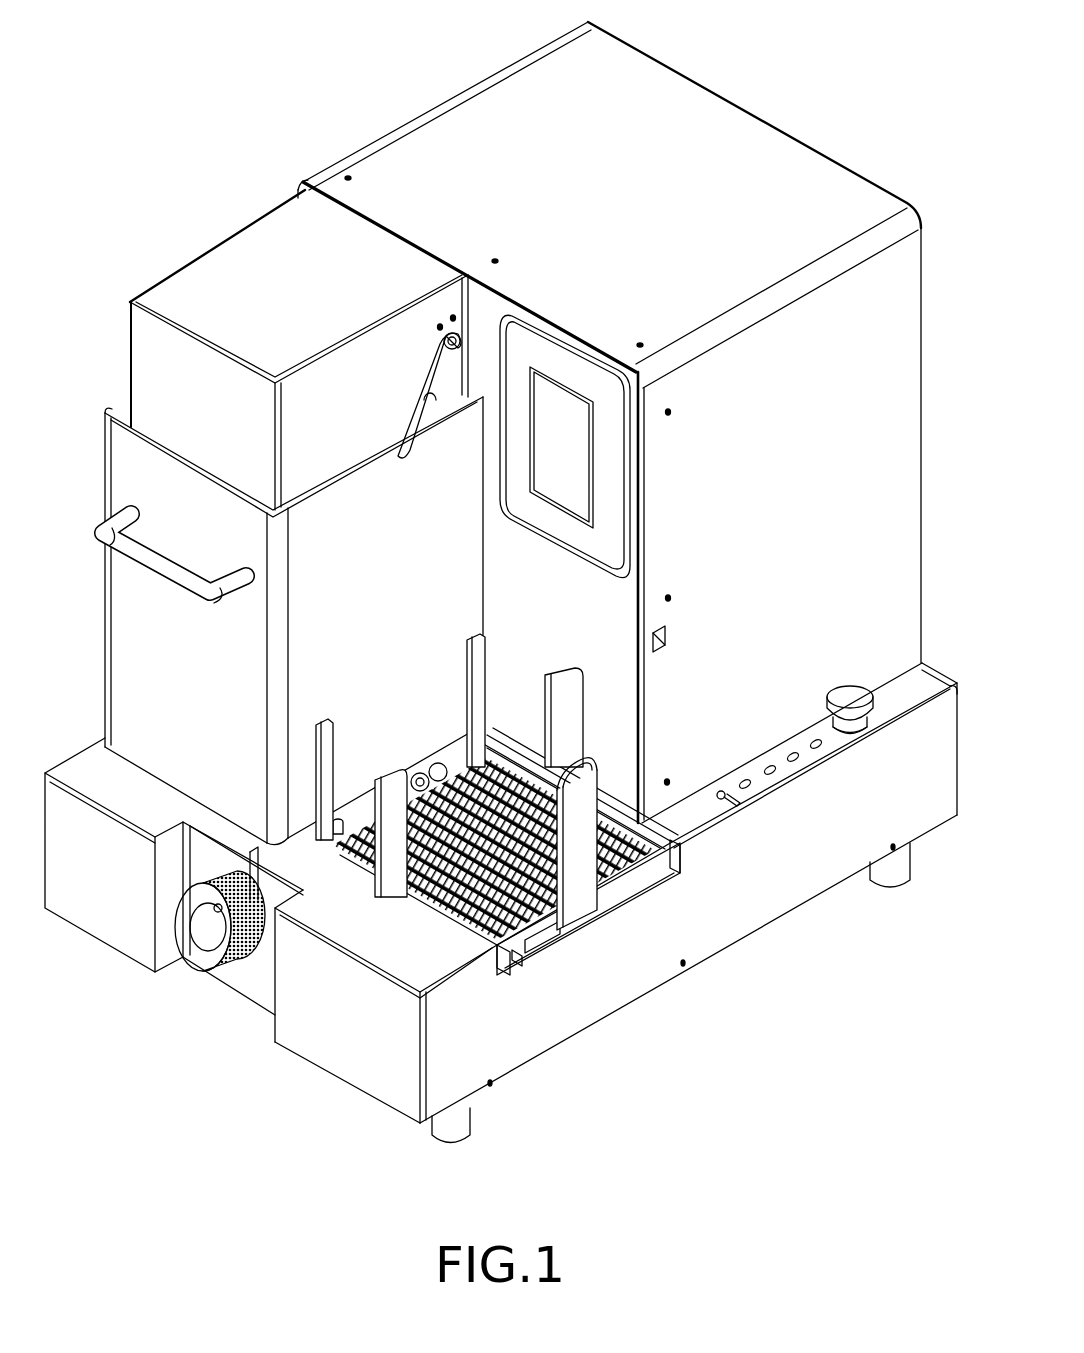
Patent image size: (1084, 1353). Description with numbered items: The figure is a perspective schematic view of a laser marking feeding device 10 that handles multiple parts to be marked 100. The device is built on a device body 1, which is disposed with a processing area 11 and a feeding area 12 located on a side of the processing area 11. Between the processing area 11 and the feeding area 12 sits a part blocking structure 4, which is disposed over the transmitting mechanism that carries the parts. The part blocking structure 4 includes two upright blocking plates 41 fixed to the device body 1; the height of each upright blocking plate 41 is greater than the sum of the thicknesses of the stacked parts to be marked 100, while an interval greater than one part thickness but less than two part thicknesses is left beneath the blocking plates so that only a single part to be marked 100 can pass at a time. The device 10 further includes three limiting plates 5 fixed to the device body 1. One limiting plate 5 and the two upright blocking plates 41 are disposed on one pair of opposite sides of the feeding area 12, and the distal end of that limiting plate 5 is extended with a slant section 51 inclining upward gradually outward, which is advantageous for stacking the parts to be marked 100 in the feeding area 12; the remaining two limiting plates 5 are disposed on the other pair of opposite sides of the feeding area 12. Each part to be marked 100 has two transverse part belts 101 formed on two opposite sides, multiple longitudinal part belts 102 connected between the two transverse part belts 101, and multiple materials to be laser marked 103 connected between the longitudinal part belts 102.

The laser marking feeding device 10 is at (203, 79).
The device body 1 is at (331, 1092).
The processing area 11 is at (388, 656).
The feeding area 12 is at (539, 880).
The part blocking structure 4 is at (398, 722).
The upright blocking plate 41 is at (330, 763).
The limiting plate 5 is at (532, 775).
The slant section 51 is at (588, 766).
The part to be marked 100 is at (505, 962).
The transverse part belt 101 is at (676, 826).
The longitudinal part belt 102 is at (535, 945).
The material to be laser marked 103 is at (515, 955).